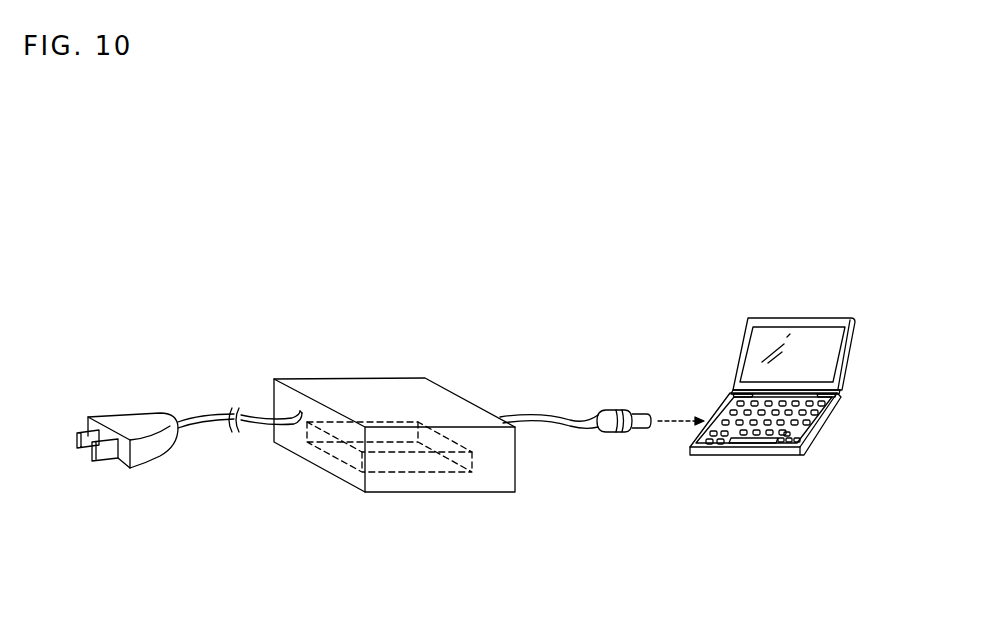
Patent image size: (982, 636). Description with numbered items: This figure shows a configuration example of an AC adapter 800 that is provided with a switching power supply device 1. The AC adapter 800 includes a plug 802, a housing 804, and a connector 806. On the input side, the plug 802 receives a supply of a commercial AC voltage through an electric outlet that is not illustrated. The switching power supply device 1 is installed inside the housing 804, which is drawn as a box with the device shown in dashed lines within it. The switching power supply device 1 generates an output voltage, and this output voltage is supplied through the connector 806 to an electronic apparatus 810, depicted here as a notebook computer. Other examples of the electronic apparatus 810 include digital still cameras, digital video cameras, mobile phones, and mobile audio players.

The AC adapter 800 is at (478, 618).
The plug 802 is at (130, 420).
The housing 804 is at (341, 379).
The switching power supply device 1 is at (408, 463).
The connector 806 is at (609, 410).
The electronic apparatus 810 is at (806, 319).